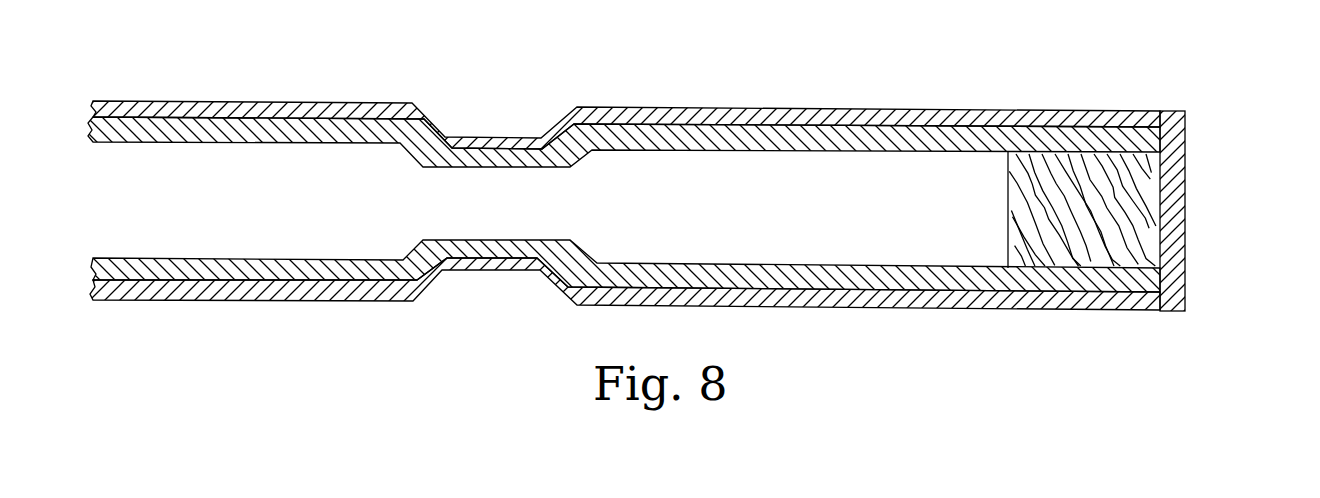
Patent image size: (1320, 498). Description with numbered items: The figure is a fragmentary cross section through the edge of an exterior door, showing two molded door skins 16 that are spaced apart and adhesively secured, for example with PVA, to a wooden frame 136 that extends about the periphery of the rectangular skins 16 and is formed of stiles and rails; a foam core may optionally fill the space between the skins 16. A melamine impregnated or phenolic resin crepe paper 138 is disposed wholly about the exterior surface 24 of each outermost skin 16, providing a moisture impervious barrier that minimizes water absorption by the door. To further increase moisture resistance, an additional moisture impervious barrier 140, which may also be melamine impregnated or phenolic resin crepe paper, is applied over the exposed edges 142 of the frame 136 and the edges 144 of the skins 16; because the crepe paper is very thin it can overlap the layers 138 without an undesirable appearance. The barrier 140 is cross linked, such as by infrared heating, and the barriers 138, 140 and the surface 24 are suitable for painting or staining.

The molded door skin 16 is at (653, 270).
The exterior surface 24 is at (625, 207).
The melamine impregnated or phenolic resin crepe paper 138 is at (902, 118).
The frame 136 is at (1008, 208).
The additional moisture impervious barrier 140 is at (1180, 157).
The exposed edges of the frame 142 is at (1167, 212).
The edges of the skins 144 is at (1185, 260).